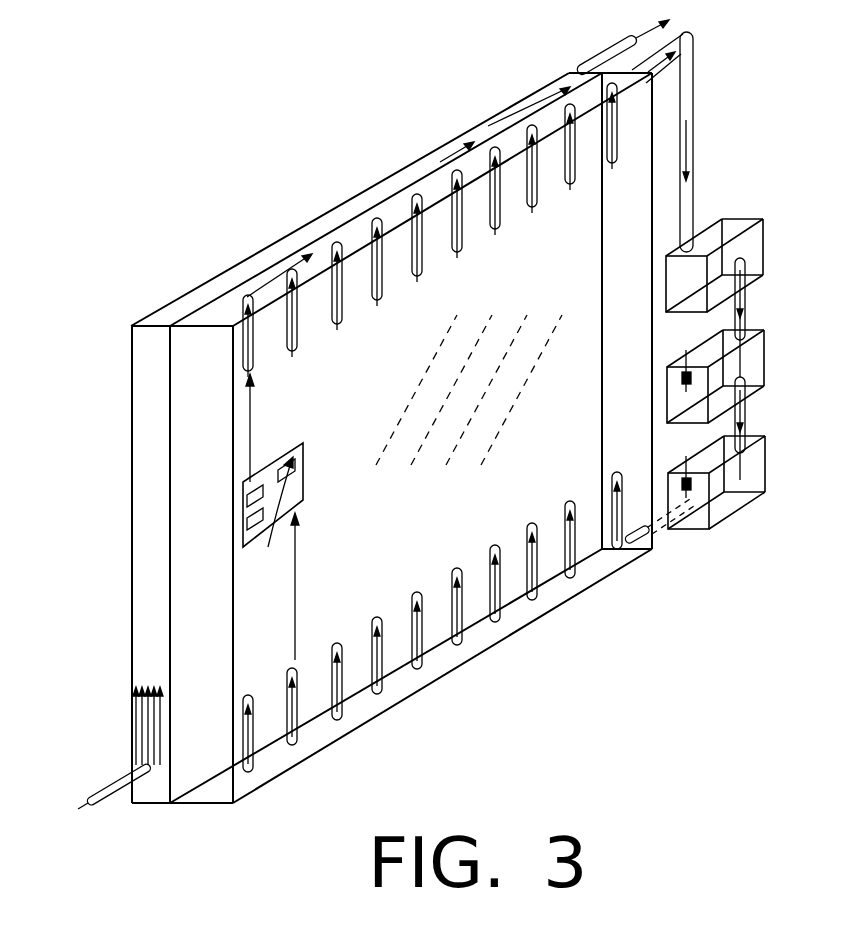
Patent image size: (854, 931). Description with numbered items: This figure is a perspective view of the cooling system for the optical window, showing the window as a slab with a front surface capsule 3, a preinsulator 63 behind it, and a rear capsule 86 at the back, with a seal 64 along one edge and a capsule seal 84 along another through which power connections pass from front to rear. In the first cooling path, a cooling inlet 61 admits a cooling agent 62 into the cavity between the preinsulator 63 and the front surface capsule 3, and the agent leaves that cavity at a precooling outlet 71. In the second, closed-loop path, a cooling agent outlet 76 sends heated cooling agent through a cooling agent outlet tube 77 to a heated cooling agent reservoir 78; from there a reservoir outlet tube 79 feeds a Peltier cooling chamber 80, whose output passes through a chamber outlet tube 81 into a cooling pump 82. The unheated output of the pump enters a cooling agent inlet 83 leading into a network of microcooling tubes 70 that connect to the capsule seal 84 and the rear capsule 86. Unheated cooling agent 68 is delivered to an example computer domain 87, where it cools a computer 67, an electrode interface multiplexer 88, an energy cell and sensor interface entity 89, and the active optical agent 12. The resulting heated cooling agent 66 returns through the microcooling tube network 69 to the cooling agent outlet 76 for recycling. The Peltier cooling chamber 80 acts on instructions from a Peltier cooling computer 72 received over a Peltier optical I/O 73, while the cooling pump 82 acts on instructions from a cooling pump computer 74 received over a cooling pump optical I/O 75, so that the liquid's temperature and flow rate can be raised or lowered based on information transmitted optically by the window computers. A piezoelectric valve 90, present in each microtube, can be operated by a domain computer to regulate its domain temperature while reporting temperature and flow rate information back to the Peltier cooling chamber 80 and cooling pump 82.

The front surface capsule 3 is at (383, 196).
The active optical agent 12 is at (430, 452).
The cooling inlet 61 is at (123, 780).
The cooling agent 62 is at (135, 716).
The preinsulator 63 is at (131, 508).
The seal 64 is at (237, 268).
The heated cooling agent 66 is at (252, 388).
The computer 67 is at (300, 498).
The unheated cooling agent 68 is at (300, 575).
The microcooling tube network 69 is at (455, 147).
The microcooling tubes 70 is at (497, 545).
The precooling outlet 71 is at (621, 48).
The Peltier cooling computer 72 is at (680, 363).
The Peltier optical I/O 73 is at (690, 388).
The cooling pump computer 74 is at (687, 467).
The cooling pump optical I/O 75 is at (690, 490).
The cooling agent outlet 76 is at (658, 58).
The cooling agent outlet tube 77 is at (689, 134).
The heated cooling agent reservoir 78 is at (764, 230).
The reservoir outlet tube 79 is at (748, 302).
The Peltier cooling chamber 80 is at (764, 346).
The chamber outlet tube 81 is at (748, 408).
The cooling pump 82 is at (768, 462).
The cooling agent inlet 83 is at (655, 533).
The capsule seal 84 is at (603, 560).
The rear capsule 86 is at (417, 688).
The computer domain 87 is at (300, 463).
The electrode interface multiplexer 88 is at (247, 518).
The energy cell and sensor interface entity 89 is at (247, 492).
The piezoelectric valve 90 is at (268, 519).